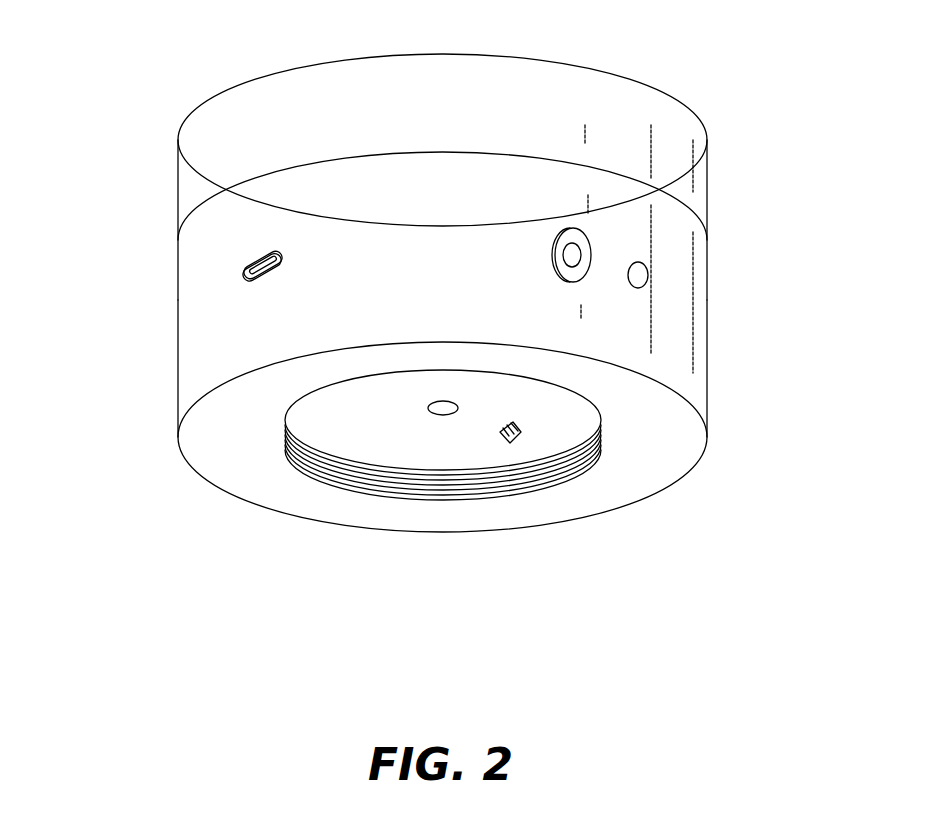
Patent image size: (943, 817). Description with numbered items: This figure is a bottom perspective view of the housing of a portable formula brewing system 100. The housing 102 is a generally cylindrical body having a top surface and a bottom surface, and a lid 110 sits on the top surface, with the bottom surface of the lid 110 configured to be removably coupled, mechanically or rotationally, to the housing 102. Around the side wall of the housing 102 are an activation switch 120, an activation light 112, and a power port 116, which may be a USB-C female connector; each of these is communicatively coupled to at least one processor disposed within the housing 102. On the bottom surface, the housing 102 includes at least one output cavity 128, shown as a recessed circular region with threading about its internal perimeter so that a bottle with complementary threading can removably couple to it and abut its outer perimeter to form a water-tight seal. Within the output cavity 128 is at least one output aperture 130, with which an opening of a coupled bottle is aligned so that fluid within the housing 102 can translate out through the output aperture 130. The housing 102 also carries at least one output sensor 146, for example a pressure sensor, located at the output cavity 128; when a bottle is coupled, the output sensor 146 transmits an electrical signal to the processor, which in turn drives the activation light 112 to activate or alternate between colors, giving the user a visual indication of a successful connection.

The portable formula brewing system 100 is at (150, 58).
The housing 102 is at (670, 340).
The lid 110 is at (200, 150).
The activation light 112 is at (638, 275).
The power port 116 is at (245, 268).
The activation switch 120 is at (572, 258).
The output cavity 128 is at (565, 453).
The output aperture 130 is at (443, 412).
The output sensor 146 is at (515, 440).